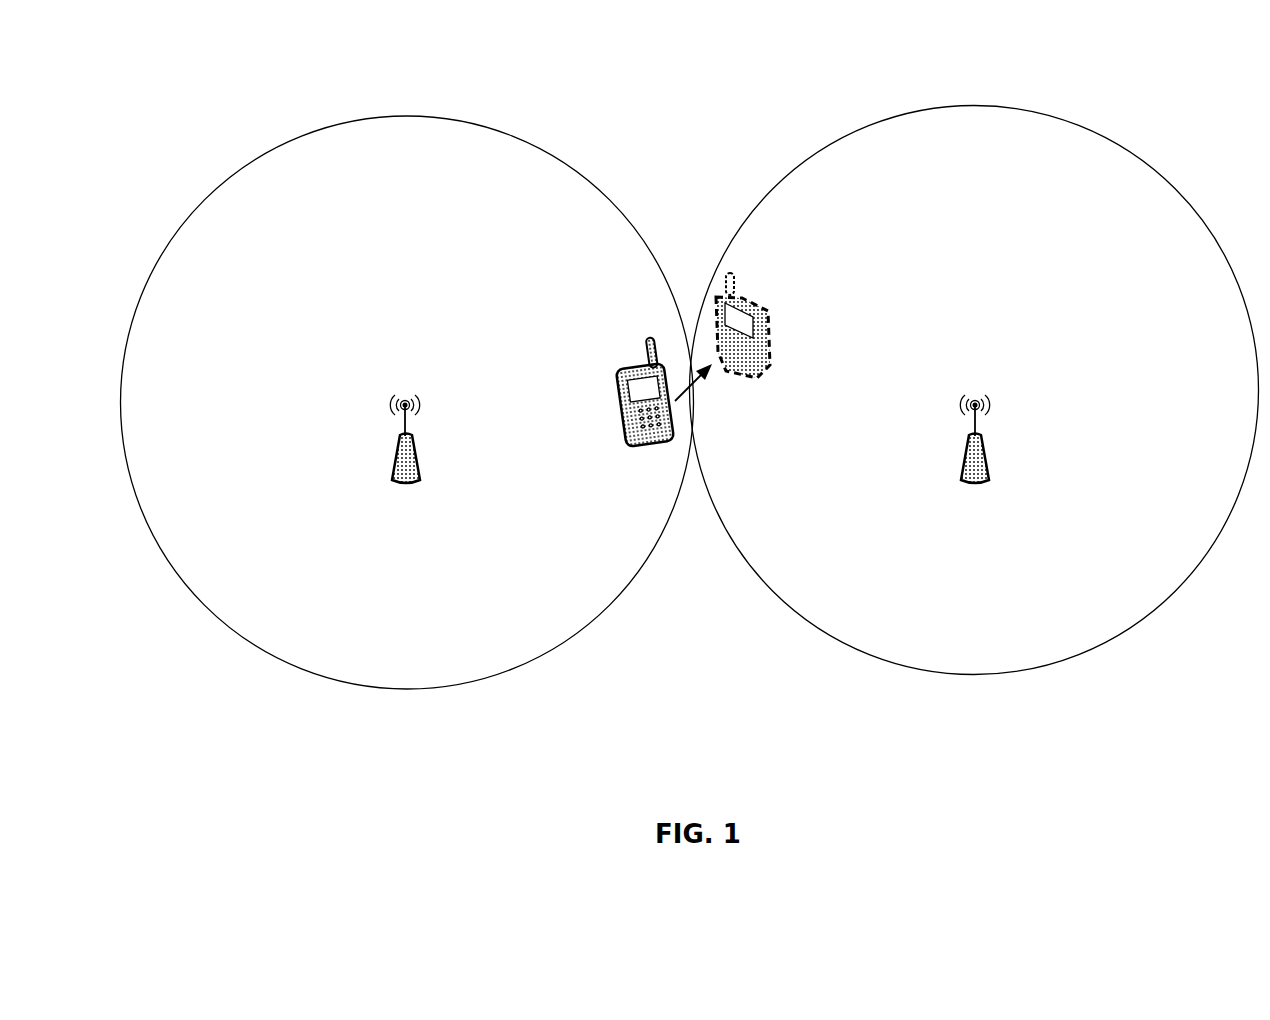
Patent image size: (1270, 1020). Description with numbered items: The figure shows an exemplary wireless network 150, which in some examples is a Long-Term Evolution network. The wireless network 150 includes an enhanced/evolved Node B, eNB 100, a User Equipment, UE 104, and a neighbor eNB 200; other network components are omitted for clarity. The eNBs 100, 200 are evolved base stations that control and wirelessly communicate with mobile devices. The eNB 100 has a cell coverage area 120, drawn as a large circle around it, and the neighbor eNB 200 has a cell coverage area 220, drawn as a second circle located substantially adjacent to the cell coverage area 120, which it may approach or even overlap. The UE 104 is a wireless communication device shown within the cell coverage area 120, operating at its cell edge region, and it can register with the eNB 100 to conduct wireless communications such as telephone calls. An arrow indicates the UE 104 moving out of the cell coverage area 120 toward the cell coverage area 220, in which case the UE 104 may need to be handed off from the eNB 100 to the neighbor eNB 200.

The enhanced/evolved Node B (eNB) 100 is at (393, 463).
The neighbor eNB 200 is at (988, 461).
The User Equipment (UE) 104 is at (617, 402).
The cell coverage area 120 is at (494, 130).
The cell coverage area 220 is at (1100, 132).
The wireless network 150 is at (272, 734).